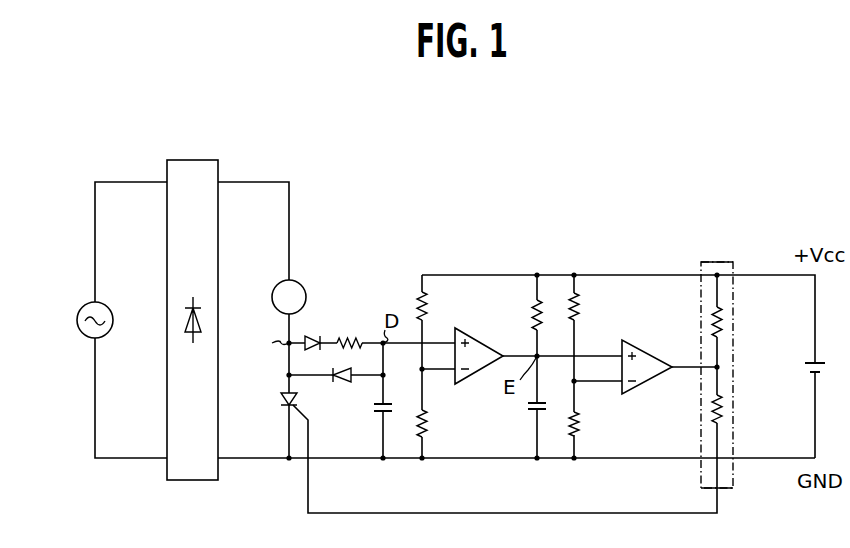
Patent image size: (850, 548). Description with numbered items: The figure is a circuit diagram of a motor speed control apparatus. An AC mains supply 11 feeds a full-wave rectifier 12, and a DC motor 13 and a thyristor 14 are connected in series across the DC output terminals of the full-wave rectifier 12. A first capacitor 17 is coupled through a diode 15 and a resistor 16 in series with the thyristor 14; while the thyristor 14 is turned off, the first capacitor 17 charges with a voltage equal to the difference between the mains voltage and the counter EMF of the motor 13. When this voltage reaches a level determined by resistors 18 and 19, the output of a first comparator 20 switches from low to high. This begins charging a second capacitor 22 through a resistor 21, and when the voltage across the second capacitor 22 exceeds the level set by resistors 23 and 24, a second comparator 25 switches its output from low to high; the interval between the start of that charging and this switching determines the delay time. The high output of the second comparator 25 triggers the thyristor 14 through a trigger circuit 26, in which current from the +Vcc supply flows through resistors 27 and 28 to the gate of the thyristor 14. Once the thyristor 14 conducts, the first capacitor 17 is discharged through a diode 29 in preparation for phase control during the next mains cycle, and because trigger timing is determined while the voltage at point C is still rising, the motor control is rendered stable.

The AC mains supply 11 is at (108, 300).
The full-wave rectifier 12 is at (212, 160).
The DC motor 13 is at (301, 286).
The thyristor 14 is at (284, 392).
The diode 15 is at (311, 336).
The resistor 16 is at (350, 336).
The first capacitor 17 is at (380, 416).
The resistor 18 is at (424, 300).
The resistor 19 is at (428, 425).
The first comparator 20 is at (476, 334).
The resistor 21 is at (542, 310).
The second capacitor 22 is at (531, 414).
The resistor 23 is at (580, 312).
The resistor 24 is at (580, 428).
The second comparator 25 is at (636, 346).
The trigger circuit 26 is at (724, 488).
The resistor 27 is at (722, 322).
The resistor 28 is at (722, 410).
The diode 29 is at (344, 382).